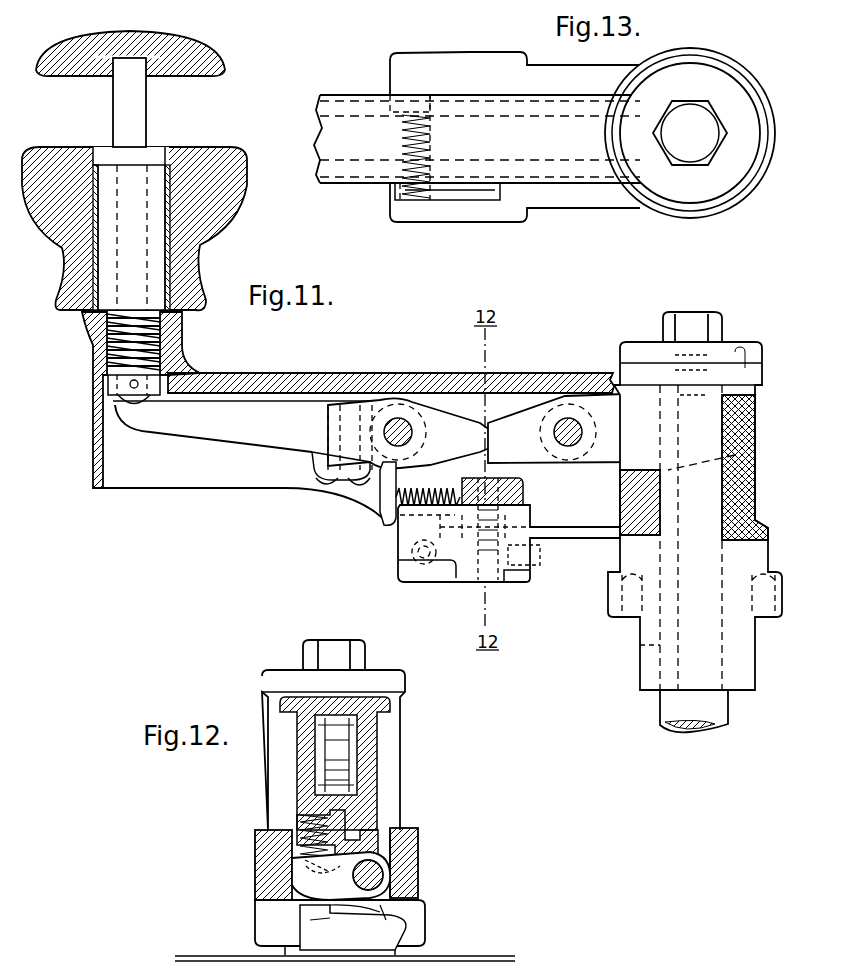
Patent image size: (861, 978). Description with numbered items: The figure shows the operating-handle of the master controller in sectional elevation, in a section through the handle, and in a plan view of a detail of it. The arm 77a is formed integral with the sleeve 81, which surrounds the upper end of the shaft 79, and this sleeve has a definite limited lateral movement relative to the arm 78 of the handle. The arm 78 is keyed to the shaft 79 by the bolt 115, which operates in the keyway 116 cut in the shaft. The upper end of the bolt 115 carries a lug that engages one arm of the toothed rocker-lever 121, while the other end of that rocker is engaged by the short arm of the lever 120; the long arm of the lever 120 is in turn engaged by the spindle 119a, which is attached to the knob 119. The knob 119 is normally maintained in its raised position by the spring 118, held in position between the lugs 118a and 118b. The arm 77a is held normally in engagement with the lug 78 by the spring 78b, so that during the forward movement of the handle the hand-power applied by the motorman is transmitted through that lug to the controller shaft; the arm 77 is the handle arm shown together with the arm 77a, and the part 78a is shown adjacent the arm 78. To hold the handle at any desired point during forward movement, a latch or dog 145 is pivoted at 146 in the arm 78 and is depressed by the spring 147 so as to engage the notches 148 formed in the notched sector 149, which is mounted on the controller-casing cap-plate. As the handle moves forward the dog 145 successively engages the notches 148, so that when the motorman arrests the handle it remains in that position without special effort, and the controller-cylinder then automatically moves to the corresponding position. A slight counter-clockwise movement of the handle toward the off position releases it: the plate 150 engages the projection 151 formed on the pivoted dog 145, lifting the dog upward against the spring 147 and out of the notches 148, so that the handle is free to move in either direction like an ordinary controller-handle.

In FIG. 11, the knob 119 is at (222, 58).
In FIG. 11, the spindle 119a is at (135, 122).
In FIG. 11, the lever 120 is at (258, 428).
In FIG. 11, the arm 77a is at (355, 372).
In FIG. 13, the arm 77a is at (356, 95).
In FIG. 12, the arm 77a is at (380, 782).
In FIG. 11, the lever 77 is at (404, 413).
In FIG. 11, the toothed rocker-lever 121 is at (608, 445).
In FIG. 11, the spring 118 is at (392, 512).
In FIG. 11, the lug 118a is at (383, 490).
In FIG. 11, the lug 118b is at (478, 470).
In FIG. 11, the arm 78 is at (562, 572).
In FIG. 13, the arm 78 is at (397, 215).
In FIG. 12, the arm 78 is at (255, 843).
In FIG. 11, the sleeve 78a is at (752, 492).
In FIG. 13, the spring 78b is at (400, 192).
In FIG. 11, the keyway 116 is at (660, 356).
In FIG. 11, the sleeve 81 is at (756, 402).
In FIG. 11, the bolt 115 is at (752, 452).
In FIG. 11, the shaft 79 is at (672, 702).
In FIG. 12, the spring 147 is at (300, 817).
In FIG. 12, the plate 150 is at (378, 812).
In FIG. 12, the projection 151 is at (418, 834).
In FIG. 12, the latch or dog 145 is at (350, 862).
In FIG. 12, the pivot 146 is at (384, 876).
In FIG. 12, the notches 148 is at (392, 920).
In FIG. 12, the notched sector 149 is at (392, 934).